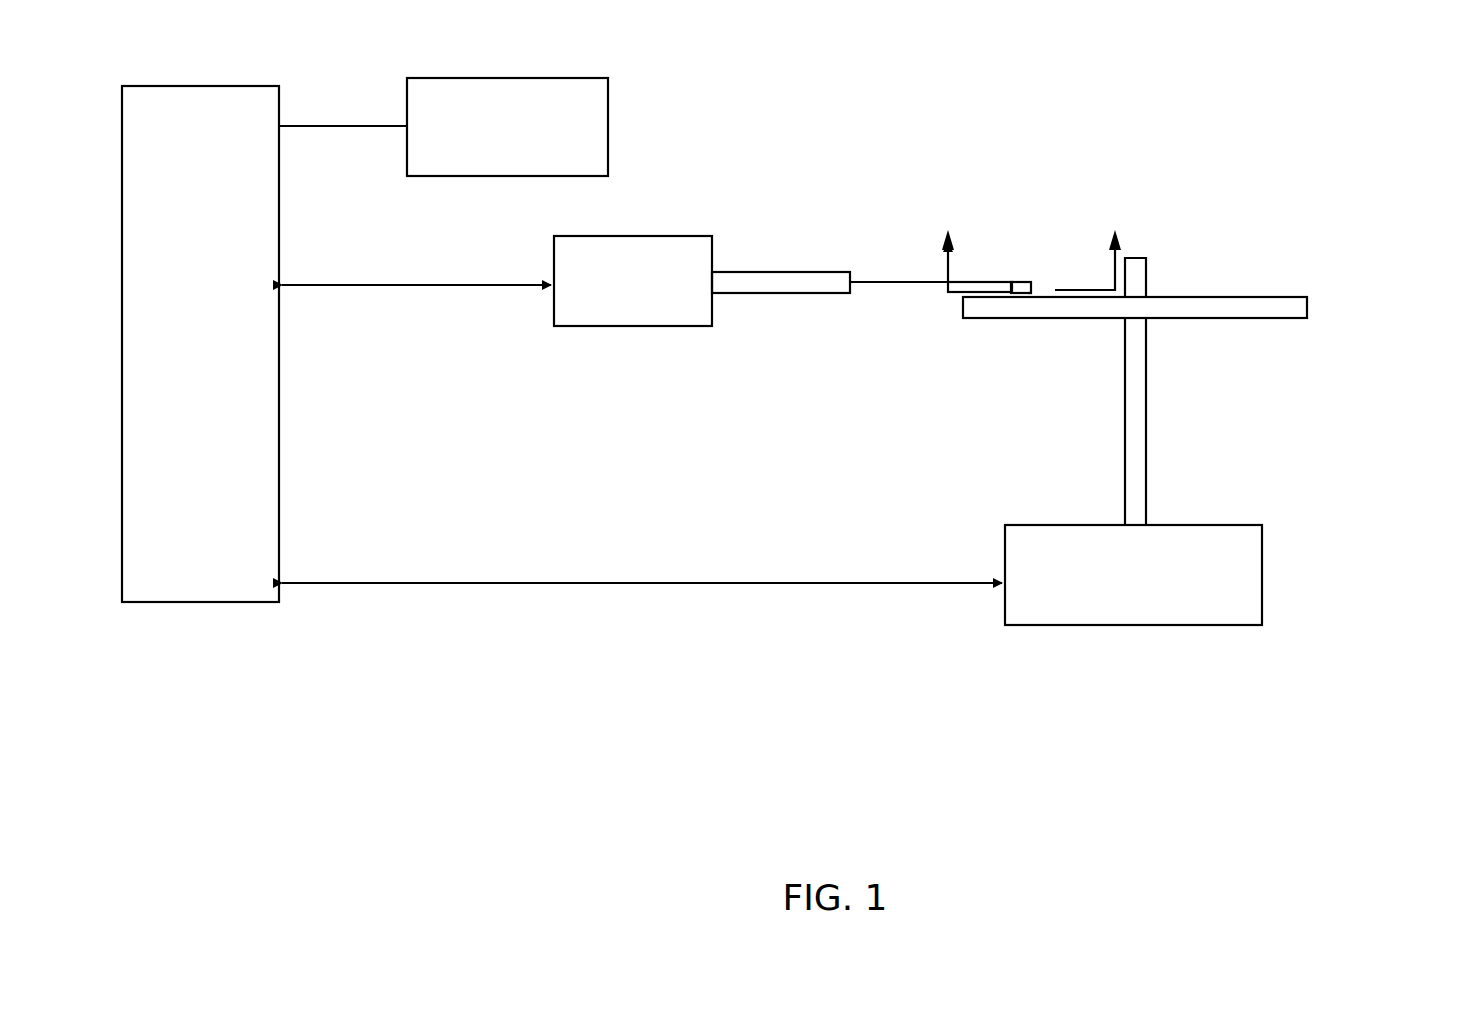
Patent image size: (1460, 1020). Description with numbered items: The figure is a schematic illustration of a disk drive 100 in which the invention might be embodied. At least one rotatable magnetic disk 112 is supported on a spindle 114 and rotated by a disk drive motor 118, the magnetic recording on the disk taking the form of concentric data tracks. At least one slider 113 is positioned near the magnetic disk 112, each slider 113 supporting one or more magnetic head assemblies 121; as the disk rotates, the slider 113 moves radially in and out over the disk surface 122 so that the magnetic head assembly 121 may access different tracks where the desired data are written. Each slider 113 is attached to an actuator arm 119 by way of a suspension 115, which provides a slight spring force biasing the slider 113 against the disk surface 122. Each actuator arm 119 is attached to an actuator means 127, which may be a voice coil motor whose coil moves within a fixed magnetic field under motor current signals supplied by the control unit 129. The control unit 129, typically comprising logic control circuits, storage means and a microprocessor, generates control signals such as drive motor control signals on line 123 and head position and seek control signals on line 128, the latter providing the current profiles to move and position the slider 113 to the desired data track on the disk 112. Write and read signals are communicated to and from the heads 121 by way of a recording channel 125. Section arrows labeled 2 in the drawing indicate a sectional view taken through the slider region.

The disk drive 100 is at (548, 712).
The magnetic disk 112 is at (1297, 333).
The slider 113 is at (1022, 283).
The spindle 114 is at (1125, 385).
The suspension 115 is at (927, 280).
The disk drive motor 118 is at (1205, 525).
The actuator arm 119 is at (758, 272).
The magnetic head assembly 121 is at (1033, 290).
The disk surface 122 is at (1252, 297).
The line 123 is at (673, 584).
The recording channel 125 is at (493, 77).
The actuator means 127 is at (640, 236).
The line 128 is at (422, 287).
The control unit 129 is at (200, 122).
The section line 2- 2 is at (1032, 245).